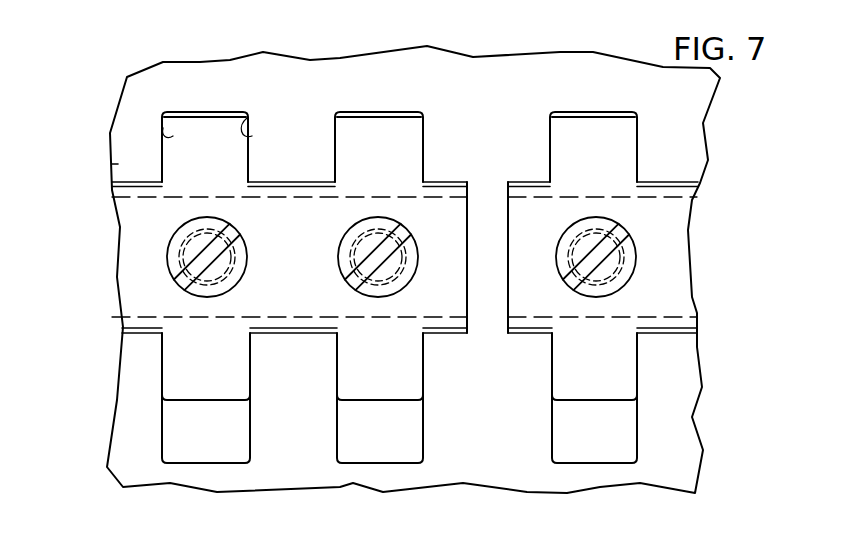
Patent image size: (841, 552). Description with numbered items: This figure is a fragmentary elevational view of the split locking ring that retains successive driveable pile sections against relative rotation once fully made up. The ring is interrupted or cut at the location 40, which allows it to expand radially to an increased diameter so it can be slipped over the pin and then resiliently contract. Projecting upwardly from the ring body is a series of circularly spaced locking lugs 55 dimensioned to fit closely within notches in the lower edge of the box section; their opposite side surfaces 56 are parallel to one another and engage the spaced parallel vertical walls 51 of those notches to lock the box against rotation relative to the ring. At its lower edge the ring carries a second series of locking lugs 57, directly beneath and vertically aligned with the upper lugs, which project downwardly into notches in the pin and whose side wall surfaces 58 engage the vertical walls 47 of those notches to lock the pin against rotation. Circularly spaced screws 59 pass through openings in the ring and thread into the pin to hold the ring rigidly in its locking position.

The location 40 is at (485, 210).
The vertical walls 47 is at (174, 374).
The vertical walls 51 is at (162, 132).
The locking lugs 55 is at (192, 133).
The side surfaces 56 is at (162, 164).
The locking lugs 57 is at (208, 390).
The side wall surfaces 58 is at (250, 348).
The screws 59 is at (351, 231).